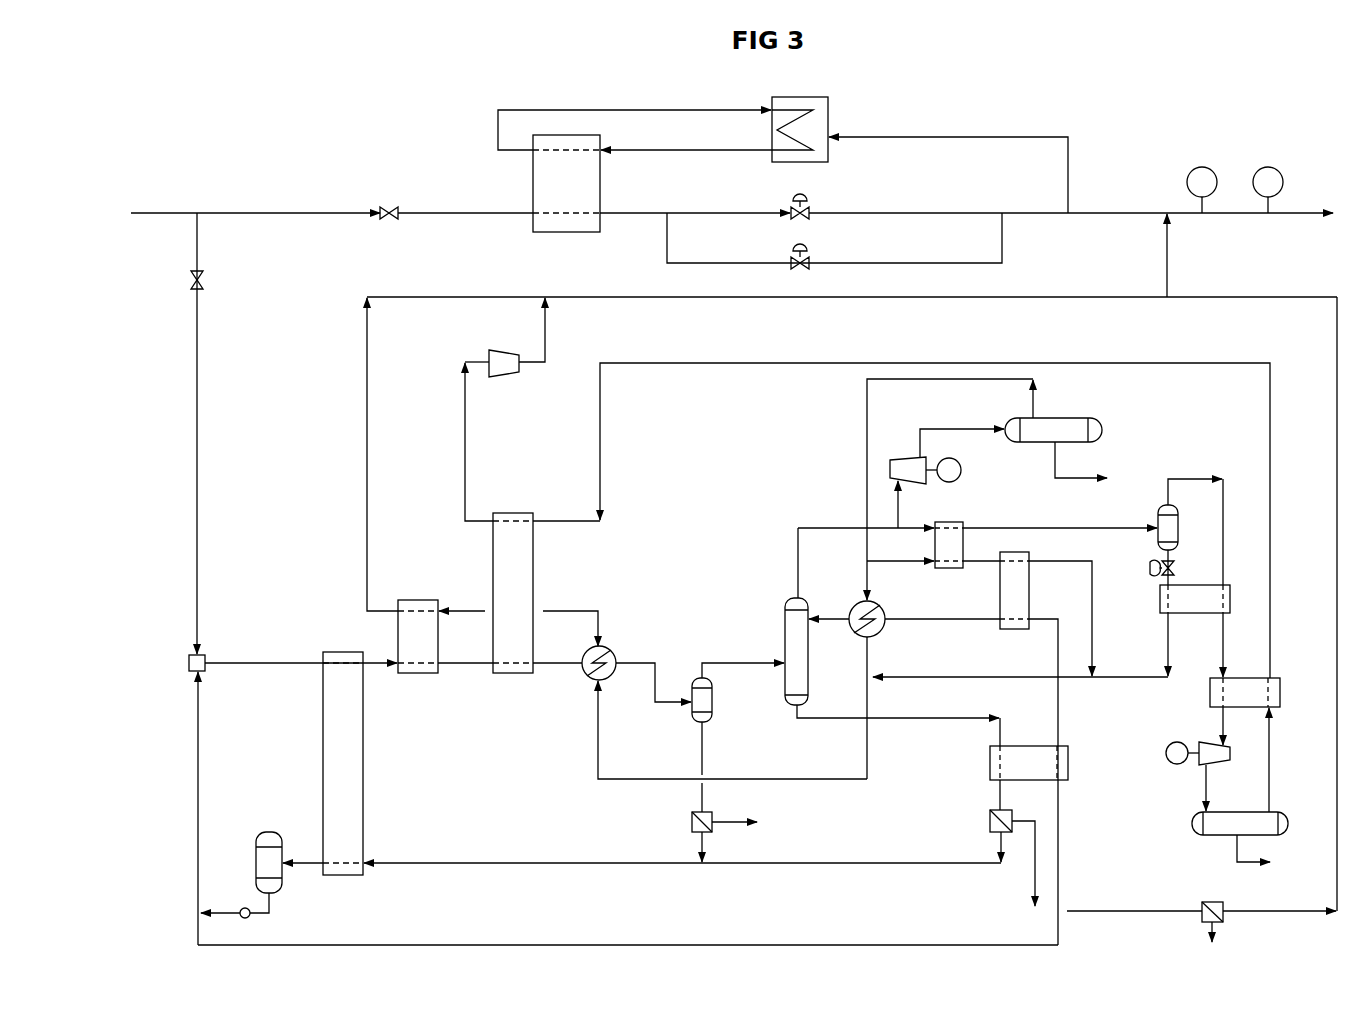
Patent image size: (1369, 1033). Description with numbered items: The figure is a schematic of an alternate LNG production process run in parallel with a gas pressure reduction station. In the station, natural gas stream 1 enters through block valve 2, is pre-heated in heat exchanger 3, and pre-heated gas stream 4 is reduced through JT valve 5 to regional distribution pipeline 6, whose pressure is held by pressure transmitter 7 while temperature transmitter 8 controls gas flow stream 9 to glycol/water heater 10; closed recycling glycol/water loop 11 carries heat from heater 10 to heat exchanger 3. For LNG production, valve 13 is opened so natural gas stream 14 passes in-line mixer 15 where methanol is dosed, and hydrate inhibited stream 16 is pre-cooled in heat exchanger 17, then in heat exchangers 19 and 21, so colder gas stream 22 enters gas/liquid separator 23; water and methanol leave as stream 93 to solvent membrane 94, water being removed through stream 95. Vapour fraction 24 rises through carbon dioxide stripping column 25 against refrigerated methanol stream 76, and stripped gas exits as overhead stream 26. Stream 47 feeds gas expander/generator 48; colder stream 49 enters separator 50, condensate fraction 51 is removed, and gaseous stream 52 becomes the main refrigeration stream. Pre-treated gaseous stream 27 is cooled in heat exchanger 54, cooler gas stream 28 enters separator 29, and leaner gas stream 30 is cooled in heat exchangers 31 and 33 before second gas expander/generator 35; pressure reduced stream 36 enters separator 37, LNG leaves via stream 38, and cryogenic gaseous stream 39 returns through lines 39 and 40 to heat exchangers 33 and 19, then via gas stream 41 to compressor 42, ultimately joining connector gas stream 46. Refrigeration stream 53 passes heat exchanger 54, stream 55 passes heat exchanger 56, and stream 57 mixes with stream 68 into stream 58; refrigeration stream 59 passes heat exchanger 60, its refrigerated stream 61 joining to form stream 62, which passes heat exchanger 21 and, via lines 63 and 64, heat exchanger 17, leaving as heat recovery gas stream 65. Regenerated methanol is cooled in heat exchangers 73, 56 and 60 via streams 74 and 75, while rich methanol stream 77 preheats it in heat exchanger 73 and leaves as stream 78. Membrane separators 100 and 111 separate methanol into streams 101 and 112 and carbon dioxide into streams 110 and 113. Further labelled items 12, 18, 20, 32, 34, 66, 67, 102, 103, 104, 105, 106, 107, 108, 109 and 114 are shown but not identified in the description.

The natural gas stream 1 is at (176, 224).
The block valve 2 is at (387, 223).
The heat exchanger 3 is at (549, 238).
The pre-heated gas stream 4 is at (647, 220).
The JT valve 5 is at (788, 202).
The regional distribution pipeline 6 is at (1097, 224).
The pressure transmitter 7 is at (1186, 169).
The temperature transmitter 8 is at (1257, 165).
The gas flow stream 9 is at (1058, 171).
The glycol/water heater 10 is at (835, 113).
The closed loop recycling glycol/water 11 is at (667, 158).
The bypass control valve 12 is at (739, 256).
The valve 13 is at (188, 283).
The natural gas stream 14 is at (210, 455).
The in-line mixer 15 is at (185, 669).
The hydrate inhibited stream 16 is at (254, 673).
The heat exchanger 17 is at (412, 682).
The line 18 is at (459, 682).
The heat exchanger 19 is at (493, 683).
The line 20 is at (554, 672).
The heat exchanger 21 is at (587, 679).
The colder gas stream 22 is at (645, 680).
The gas/liquid separator 23 is at (688, 722).
The vapour fraction 24 is at (716, 654).
The carbon dioxide stripping column 25 is at (779, 691).
The overhead stream 26 is at (791, 583).
The pre-treated gaseous stream 27 is at (917, 538).
The cooler gas stream 28 is at (1036, 522).
The separator 29 is at (1181, 530).
The leaner gas stream 30 is at (1197, 476).
The heat exchanger 31 is at (1233, 596).
The line 32 is at (1229, 639).
The heat exchanger 33 is at (1206, 696).
The line 34 is at (1230, 722).
The second gas expander/generator 35 is at (1222, 772).
The pressure reduced stream 36 is at (1198, 779).
The separator 37 is at (1185, 827).
The stream 38 is at (1230, 848).
The cryogenic gaseous stream 39 is at (1279, 761).
The line 40 is at (1238, 358).
The gas stream 41 is at (470, 432).
The compressor 42 is at (510, 380).
The connector gas stream 46 is at (1175, 258).
The stream 47 is at (907, 516).
The pressure reducing gas expander/generator 48 is at (904, 450).
The colder gas stream 49 is at (936, 419).
The separator 50 is at (1078, 409).
The condensate fraction 51 is at (1046, 458).
The gaseous stream 52 is at (857, 416).
The natural gas refrigeration stream 53 is at (889, 574).
The heat exchanger 54 is at (941, 577).
The natural gas refrigeration stream 55 is at (981, 574).
The heat exchanger 56 is at (1037, 582).
The stream 57 is at (1099, 618).
The stream 58 is at (1013, 690).
The natural gas refrigeration stream 59 is at (858, 571).
The heat exchanger 60 is at (890, 642).
The refrigerated stream 61 is at (856, 657).
The natural gas refrigeration stream 62 is at (875, 757).
The line 63 is at (607, 623).
The line 64 is at (468, 598).
The heat recovery gas stream 65 is at (377, 489).
The valve actuator 66 is at (1148, 562).
The valve 67 is at (1180, 575).
The stream 68 is at (1158, 641).
The heat exchanger 73 is at (1076, 766).
The stream 74 is at (1068, 712).
The stream 75 is at (979, 632).
The refrigerated methanol stream 76 is at (828, 608).
The rich methanol stream 77 is at (990, 732).
The preheated rich methanol stream 78 is at (990, 799).
The stream 93 is at (712, 761).
The solvent membrane 94 is at (714, 840).
The water stream 95 is at (740, 814).
The membrane separator 100 is at (984, 821).
The methanol stream 101 is at (984, 855).
The line 102 is at (608, 853).
The heat exchanger 103 is at (372, 762).
The line 104 is at (303, 874).
The tank 105 is at (271, 822).
The line 106 is at (277, 907).
The pump 107 is at (242, 900).
The line 108 is at (188, 750).
The line 109 is at (639, 939).
The carbon dioxide stream 110 is at (1118, 923).
The membrane separator 111 is at (1193, 903).
The methanol stream 112 is at (1230, 936).
The carbon dioxide stream 113 is at (1326, 530).
The line 114 is at (564, 314).